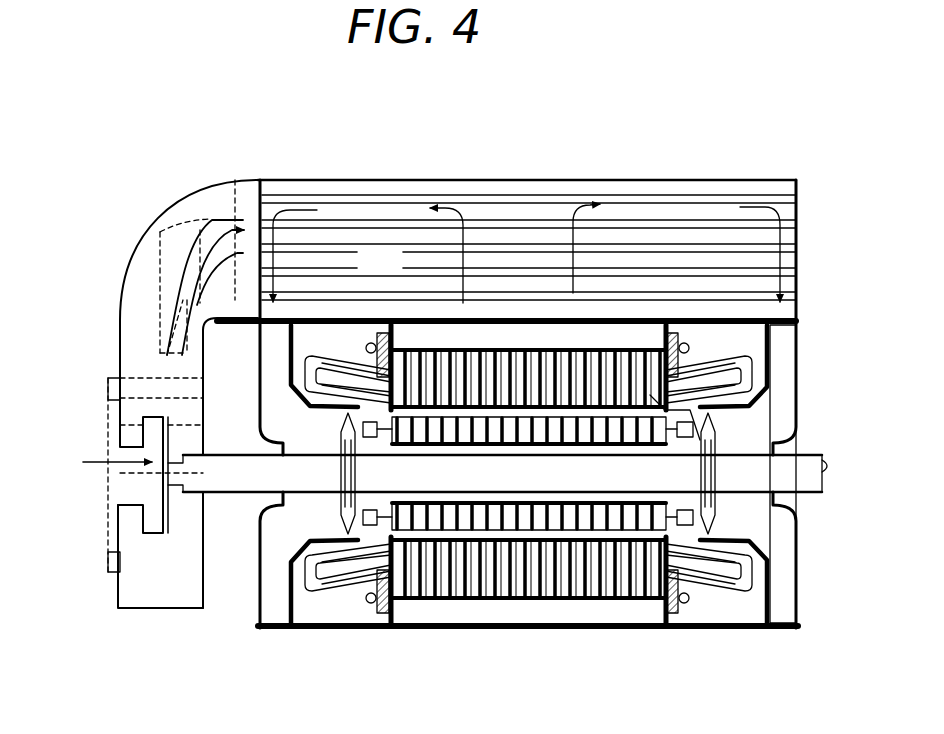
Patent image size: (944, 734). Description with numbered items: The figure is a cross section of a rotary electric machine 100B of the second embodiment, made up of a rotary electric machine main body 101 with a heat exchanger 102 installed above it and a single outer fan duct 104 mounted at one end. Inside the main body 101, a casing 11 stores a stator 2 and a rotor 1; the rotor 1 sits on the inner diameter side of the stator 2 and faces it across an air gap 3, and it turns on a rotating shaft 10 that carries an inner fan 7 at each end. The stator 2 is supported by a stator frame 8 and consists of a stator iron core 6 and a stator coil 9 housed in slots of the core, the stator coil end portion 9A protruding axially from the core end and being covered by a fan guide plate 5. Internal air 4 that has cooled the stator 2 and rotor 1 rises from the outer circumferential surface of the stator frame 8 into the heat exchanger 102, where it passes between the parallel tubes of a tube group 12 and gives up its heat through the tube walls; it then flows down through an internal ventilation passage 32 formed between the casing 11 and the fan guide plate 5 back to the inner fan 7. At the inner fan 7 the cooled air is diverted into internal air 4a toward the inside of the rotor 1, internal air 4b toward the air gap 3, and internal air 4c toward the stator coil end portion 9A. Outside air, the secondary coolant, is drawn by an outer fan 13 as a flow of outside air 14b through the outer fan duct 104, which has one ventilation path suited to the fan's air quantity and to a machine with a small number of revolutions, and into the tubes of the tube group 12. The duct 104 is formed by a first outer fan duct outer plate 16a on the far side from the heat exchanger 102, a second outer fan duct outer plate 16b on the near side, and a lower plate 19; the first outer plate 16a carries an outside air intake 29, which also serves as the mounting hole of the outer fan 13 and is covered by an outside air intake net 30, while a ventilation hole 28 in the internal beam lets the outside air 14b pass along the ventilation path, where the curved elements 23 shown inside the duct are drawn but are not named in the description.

The rotor 1 is at (494, 487).
The stator 2 is at (506, 578).
The air gap 3 is at (350, 420).
The internal air 4 is at (748, 203).
The internal air toward the inside of the rotor 4a is at (682, 448).
The internal air toward the air gap 4b is at (700, 409).
The internal air toward the stator coil end portion 4c is at (688, 395).
The fan guide plate 5 is at (772, 587).
The stator iron core 6 is at (678, 601).
The inner fan 7 is at (345, 515).
The stator frame 8 is at (659, 332).
The stator coil 9 is at (755, 394).
The stator coil end portion 9A is at (741, 357).
The rotating shaft 10 is at (738, 493).
The casing 11 is at (797, 320).
The tube group 12 is at (352, 217).
The outer fan 13 is at (153, 525).
The flow of outside air 14b is at (167, 340).
The first outer fan duct outer plate 16a is at (120, 350).
The second outer fan duct outer plate 16b is at (205, 577).
The lower plate 19 is at (153, 608).
The guide vane 23 is at (217, 218).
The ventilation hole 28 is at (168, 245).
The outside air intake 29 is at (118, 490).
The outside air intake net 30 is at (108, 533).
The internal ventilation passage 32 is at (784, 357).
The rotary electric machine 100B is at (470, 168).
The rotary electric machine main body 101 is at (798, 390).
The heat exchanger 102 is at (364, 273).
The outer fan duct 104 is at (176, 197).